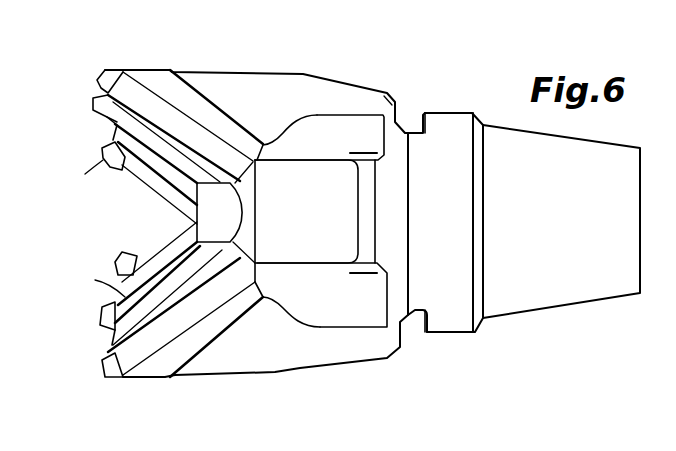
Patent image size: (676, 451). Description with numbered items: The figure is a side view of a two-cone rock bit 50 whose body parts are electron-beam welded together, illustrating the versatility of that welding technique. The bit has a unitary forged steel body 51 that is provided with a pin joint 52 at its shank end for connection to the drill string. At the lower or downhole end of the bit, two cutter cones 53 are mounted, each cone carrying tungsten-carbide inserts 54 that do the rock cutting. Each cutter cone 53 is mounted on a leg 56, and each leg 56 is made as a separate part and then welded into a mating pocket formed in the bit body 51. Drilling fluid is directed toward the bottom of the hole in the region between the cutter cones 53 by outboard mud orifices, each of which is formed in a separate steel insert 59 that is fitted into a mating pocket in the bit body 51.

The two-cone rock bit 50 is at (256, 60).
The bit body 51 is at (437, 113).
The pin joint 52 is at (603, 142).
The cutter cone 53 is at (136, 71).
The tungsten-carbide inserts 54 is at (95, 181).
The leg 56 is at (363, 86).
The steel insert 59 is at (358, 223).